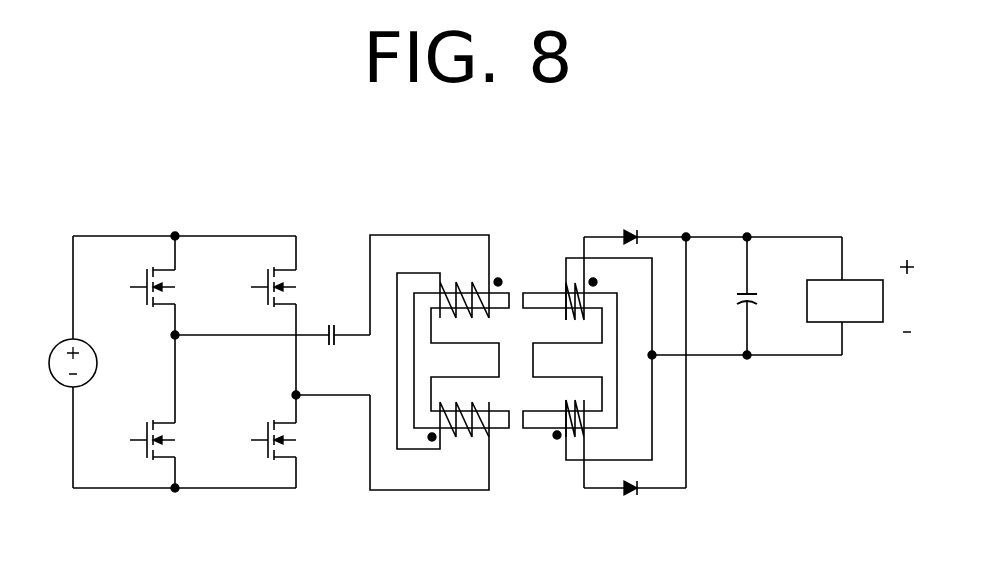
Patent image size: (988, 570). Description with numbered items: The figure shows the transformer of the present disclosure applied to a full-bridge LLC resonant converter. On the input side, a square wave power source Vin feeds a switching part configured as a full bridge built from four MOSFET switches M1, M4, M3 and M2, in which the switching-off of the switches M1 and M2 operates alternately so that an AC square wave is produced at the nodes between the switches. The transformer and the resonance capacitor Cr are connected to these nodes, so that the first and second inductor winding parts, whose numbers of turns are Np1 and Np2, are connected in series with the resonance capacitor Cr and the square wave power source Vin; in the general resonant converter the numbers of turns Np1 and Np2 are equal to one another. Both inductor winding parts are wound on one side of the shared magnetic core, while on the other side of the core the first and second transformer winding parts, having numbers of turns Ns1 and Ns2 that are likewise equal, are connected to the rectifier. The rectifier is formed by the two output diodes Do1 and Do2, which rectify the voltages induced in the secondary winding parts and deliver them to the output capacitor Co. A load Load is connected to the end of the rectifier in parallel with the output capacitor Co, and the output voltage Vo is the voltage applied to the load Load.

The square wave power source Vin is at (57, 363).
The switch M1 is at (137, 287).
The switch M2 is at (254, 440).
The third switch (MOSFET) M3 is at (137, 440).
The fourth switch (MOSFET) M4 is at (254, 287).
The resonance capacitor Cr is at (348, 318).
The number of turns of the first inductor winding part Np1 is at (471, 284).
The number of turns of the second inductor winding part Np2 is at (458, 439).
The number of turns of the first transformer winding part Ns1 is at (561, 278).
The number of turns of the second transformer winding part Ns2 is at (555, 444).
The first output diode Do1 is at (713, 222).
The second output diode Do2 is at (635, 508).
The output capacitor Co is at (761, 296).
The load Load is at (845, 296).
The output voltage Vo is at (905, 296).